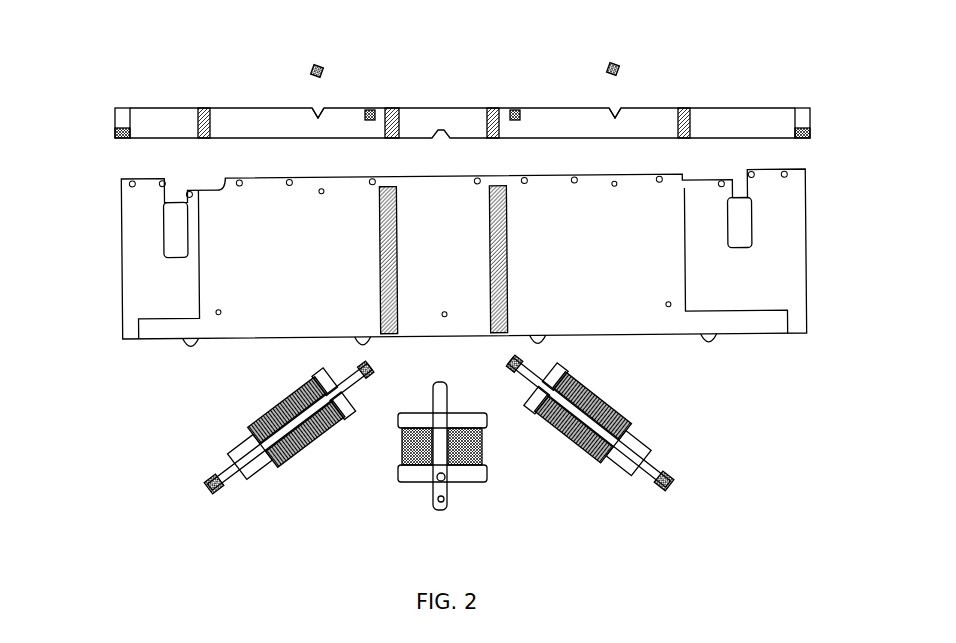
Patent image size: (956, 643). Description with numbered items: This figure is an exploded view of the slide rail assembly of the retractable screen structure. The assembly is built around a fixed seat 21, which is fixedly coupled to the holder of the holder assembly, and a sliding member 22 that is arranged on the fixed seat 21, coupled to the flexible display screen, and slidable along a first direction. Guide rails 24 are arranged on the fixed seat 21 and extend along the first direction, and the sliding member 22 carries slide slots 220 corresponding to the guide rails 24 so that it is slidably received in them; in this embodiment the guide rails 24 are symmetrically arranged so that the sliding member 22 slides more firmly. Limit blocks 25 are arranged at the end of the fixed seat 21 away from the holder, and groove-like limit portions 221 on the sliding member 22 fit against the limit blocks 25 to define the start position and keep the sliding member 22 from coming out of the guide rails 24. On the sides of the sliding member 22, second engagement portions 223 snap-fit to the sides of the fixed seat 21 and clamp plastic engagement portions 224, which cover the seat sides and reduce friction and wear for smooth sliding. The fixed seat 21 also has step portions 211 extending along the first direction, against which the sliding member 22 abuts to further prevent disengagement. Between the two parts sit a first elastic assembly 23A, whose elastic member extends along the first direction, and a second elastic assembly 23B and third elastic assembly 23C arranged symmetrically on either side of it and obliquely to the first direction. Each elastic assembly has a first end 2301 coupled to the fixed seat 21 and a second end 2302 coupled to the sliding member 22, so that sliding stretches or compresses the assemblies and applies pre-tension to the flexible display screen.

The fixed seat 21 is at (453, 290).
The step portion 211 is at (198, 272).
The sliding member 22 is at (473, 91).
The slide slot 220 is at (442, 87).
The limit portion 221 is at (318, 116).
The second engagement portion 223 is at (118, 123).
The plastic engagement portion 224 is at (203, 126).
The guide rail 24 is at (388, 258).
The limit block 25 is at (318, 66).
The first elastic assembly 23A is at (406, 452).
The second elastic assembly 23B is at (307, 440).
The third elastic assembly 23C is at (590, 436).
The first end 2301 is at (215, 481).
The second end 2302 is at (352, 378).